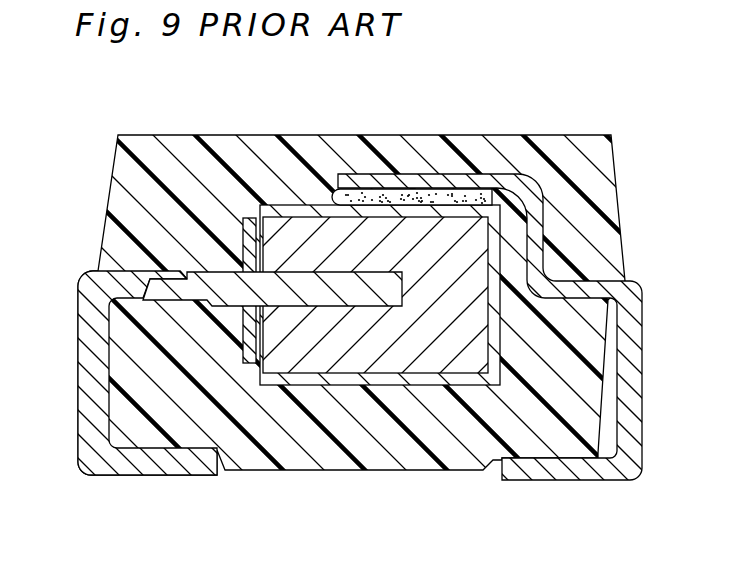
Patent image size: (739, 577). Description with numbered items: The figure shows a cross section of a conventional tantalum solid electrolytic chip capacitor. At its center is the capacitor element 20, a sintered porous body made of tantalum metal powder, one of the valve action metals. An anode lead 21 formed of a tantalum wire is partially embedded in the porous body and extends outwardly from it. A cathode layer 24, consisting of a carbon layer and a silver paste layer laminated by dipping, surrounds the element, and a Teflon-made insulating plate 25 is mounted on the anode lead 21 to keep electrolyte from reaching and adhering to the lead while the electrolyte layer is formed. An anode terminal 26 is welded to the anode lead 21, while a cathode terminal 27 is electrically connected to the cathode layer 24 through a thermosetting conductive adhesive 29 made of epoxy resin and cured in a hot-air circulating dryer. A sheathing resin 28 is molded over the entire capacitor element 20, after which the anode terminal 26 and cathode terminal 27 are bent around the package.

The capacitor element 20 is at (380, 353).
The anode lead 21 is at (218, 276).
The cathode layer 24 is at (308, 205).
The insulating plate 25 is at (243, 367).
The anode terminal 26 is at (95, 272).
The cathode terminal 27 is at (431, 176).
The sheathing resin 28 is at (326, 452).
The thermosetting conductive adhesive 29 is at (376, 193).